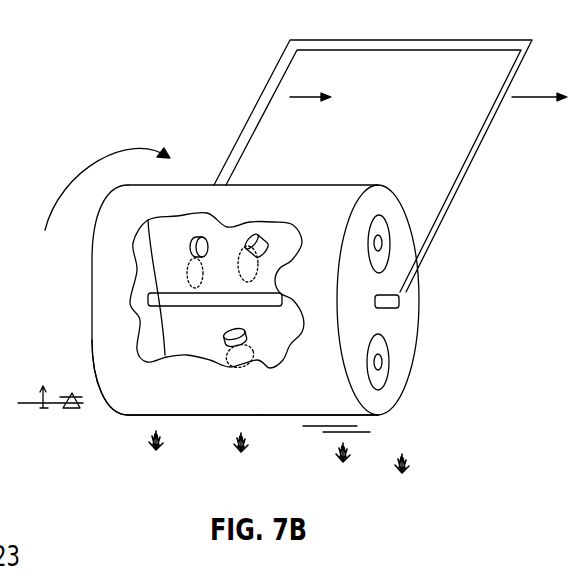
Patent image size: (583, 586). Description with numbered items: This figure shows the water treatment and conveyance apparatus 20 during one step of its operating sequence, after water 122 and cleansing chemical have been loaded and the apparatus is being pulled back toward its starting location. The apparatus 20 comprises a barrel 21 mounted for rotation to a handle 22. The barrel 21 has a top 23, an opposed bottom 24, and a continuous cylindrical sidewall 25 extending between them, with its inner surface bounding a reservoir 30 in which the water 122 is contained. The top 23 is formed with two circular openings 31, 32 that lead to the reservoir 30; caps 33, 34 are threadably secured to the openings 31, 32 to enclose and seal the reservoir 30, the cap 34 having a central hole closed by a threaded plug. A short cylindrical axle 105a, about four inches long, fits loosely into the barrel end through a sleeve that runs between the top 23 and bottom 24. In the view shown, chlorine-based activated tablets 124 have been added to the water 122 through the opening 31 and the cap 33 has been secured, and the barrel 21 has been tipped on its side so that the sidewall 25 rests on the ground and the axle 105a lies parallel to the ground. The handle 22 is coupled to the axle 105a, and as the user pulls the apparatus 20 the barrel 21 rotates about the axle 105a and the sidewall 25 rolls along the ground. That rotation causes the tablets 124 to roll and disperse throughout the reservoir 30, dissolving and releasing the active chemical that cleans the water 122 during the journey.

The water treatment and conveyance apparatus 20 is at (198, 109).
The handle 22 is at (258, 103).
The reservoir 30 is at (222, 248).
The water 122 is at (148, 342).
The chlorine-based activated tablets 124 is at (187, 246).
The top 23 is at (376, 416).
The circular opening 32 is at (382, 243).
The cap 34 is at (389, 262).
The axle 105a is at (390, 310).
The circular opening 31 is at (382, 362).
The cap 33 is at (388, 382).
The bottom 24 is at (128, 417).
The cylindrical sidewall 25 is at (213, 417).
The barrel 21 is at (284, 408).